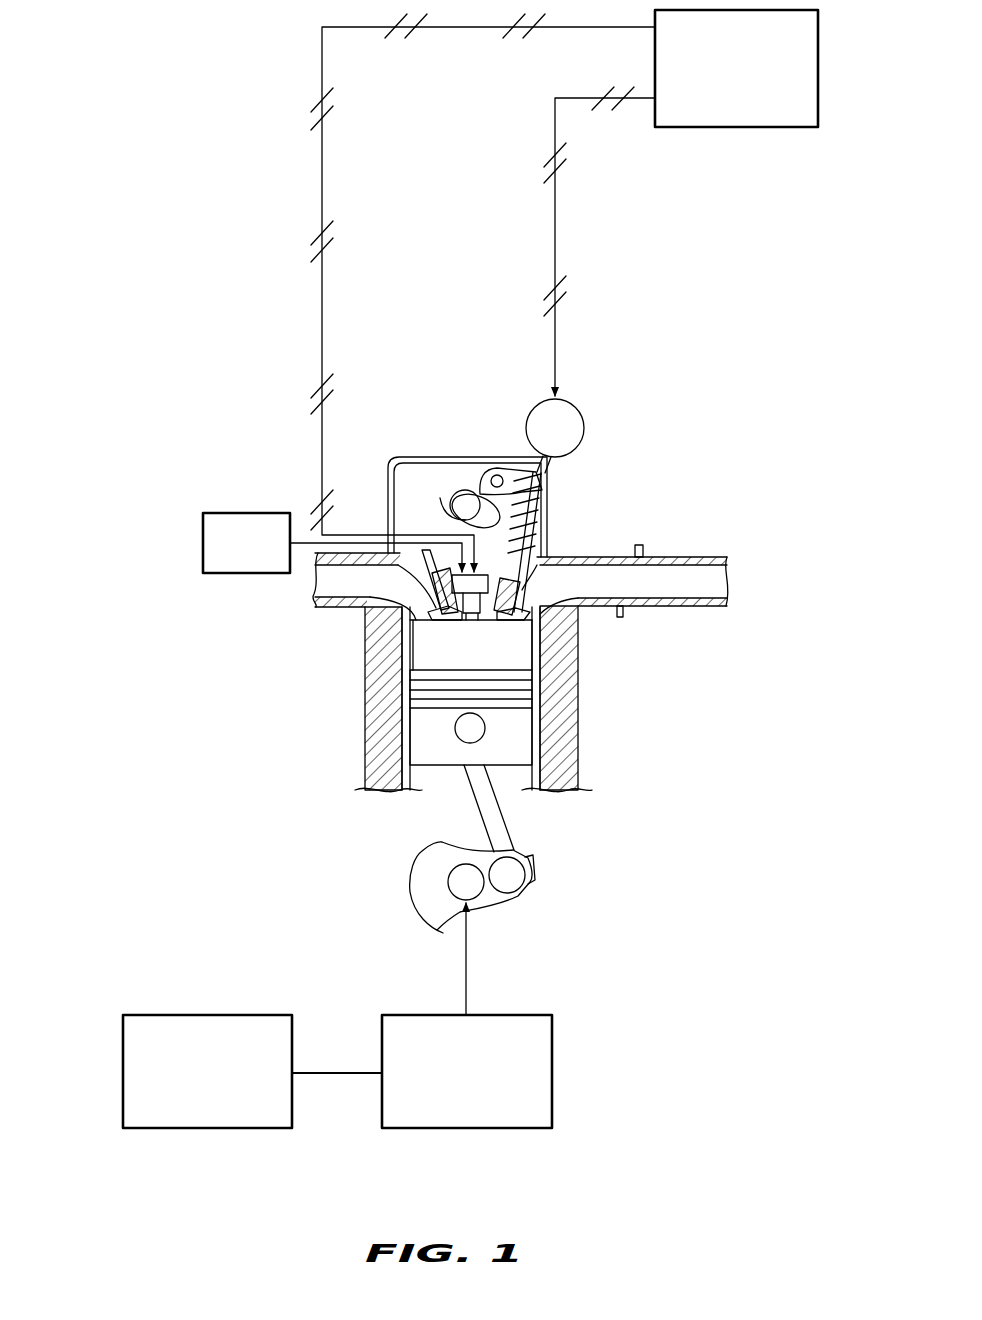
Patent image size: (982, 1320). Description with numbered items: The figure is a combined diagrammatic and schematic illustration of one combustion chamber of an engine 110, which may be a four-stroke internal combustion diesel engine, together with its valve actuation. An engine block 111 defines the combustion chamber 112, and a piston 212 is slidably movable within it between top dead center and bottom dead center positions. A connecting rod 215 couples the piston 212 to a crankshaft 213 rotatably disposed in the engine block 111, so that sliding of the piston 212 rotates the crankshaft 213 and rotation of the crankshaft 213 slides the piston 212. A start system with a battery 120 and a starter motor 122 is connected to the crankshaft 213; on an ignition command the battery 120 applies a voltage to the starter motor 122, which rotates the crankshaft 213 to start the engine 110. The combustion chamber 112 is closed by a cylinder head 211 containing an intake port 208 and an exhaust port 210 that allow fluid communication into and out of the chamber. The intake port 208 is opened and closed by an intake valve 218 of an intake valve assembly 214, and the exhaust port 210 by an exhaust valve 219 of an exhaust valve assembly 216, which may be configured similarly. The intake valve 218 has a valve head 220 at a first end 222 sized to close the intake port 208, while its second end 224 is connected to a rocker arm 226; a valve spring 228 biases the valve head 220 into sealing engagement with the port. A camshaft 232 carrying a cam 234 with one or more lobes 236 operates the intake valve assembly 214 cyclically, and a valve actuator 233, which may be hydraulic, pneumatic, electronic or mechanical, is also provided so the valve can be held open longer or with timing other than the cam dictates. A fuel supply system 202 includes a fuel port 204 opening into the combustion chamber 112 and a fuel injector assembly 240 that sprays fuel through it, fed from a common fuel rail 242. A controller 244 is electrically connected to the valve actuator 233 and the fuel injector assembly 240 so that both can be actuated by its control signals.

The engine 110 is at (708, 340).
The engine block 111 is at (578, 769).
The combustion chamber 112 is at (400, 673).
The battery 120 is at (252, 1071).
The starter motor 122 is at (467, 1015).
The fuel supply system 202 is at (150, 495).
The fuel port 204 is at (468, 628).
The intake port 208 is at (577, 582).
The exhaust port 210 is at (328, 580).
The cylinder head 211 is at (378, 469).
The piston 212 is at (525, 730).
The crankshaft 213 is at (472, 890).
The intake valve assembly 214 is at (560, 472).
The connecting rod 215 is at (490, 800).
The exhaust valve assembly 216 is at (422, 548).
The intake valve 218 is at (560, 626).
The exhaust valve 219 is at (400, 614).
The valve head 220 is at (500, 626).
The first end 222 is at (520, 632).
The second end 224 is at (530, 458).
The rocker arm 226 is at (520, 461).
The valve spring 228 is at (546, 512).
The camshaft 232 is at (482, 493).
The valve actuator 233 is at (583, 410).
The cam 234 is at (442, 500).
The lobes 236 is at (452, 498).
The fuel injector assembly 240 is at (452, 584).
The common fuel rail 242 is at (332, 543).
The controller 244 is at (564, 291).